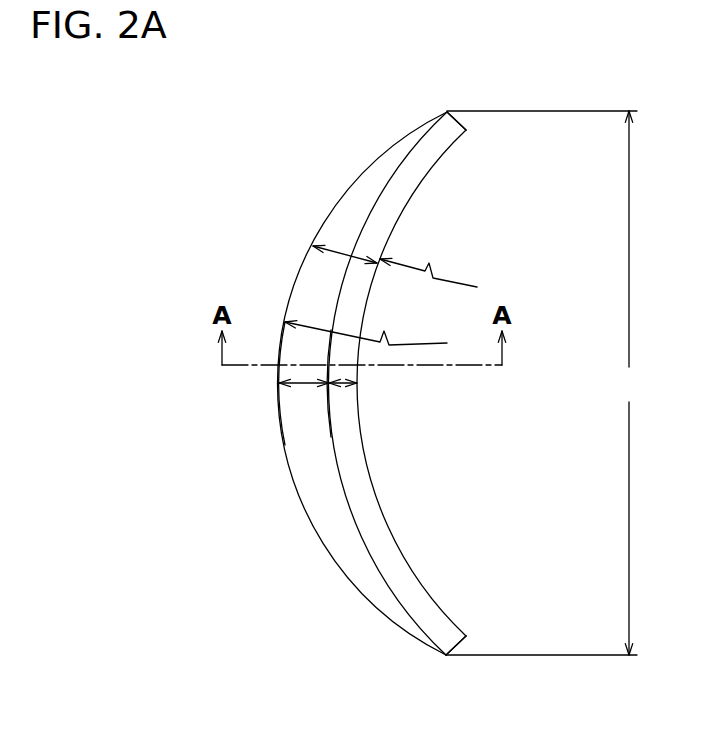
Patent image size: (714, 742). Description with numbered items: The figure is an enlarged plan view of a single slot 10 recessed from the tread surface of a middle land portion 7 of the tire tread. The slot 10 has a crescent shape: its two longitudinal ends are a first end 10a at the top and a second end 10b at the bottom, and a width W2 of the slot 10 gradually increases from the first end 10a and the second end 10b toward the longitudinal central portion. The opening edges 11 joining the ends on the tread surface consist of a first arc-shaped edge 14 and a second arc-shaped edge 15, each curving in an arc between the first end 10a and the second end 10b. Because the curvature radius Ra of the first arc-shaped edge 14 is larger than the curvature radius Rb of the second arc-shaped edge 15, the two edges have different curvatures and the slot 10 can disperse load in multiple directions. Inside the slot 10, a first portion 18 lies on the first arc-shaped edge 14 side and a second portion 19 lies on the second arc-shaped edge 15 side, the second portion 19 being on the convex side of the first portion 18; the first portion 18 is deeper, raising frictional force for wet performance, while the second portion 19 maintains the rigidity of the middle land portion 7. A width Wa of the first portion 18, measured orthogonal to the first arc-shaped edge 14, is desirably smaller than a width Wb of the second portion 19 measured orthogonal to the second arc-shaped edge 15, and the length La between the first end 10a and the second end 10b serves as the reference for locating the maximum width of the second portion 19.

The middle land portion 7 is at (170, 556).
The slot 10 is at (384, 363).
The first end 10a is at (447, 112).
The second end 10b is at (446, 655).
The opening edge 11 is at (384, 383).
The first arc-shaped edge 14 is at (405, 553).
The second arc-shaped edge 15 is at (347, 580).
The first portion 18 is at (358, 488).
The second portion 19 is at (313, 467).
The width of the slot W2 is at (340, 252).
The width of the first portion Wa is at (352, 393).
The width of the second portion Wb is at (300, 393).
The curvature radius of the first arc-shaped edge Ra is at (428, 265).
The curvature radius of the second arc-shaped edge Rb is at (366, 326).
The length between the first end and the second end La is at (545, 383).